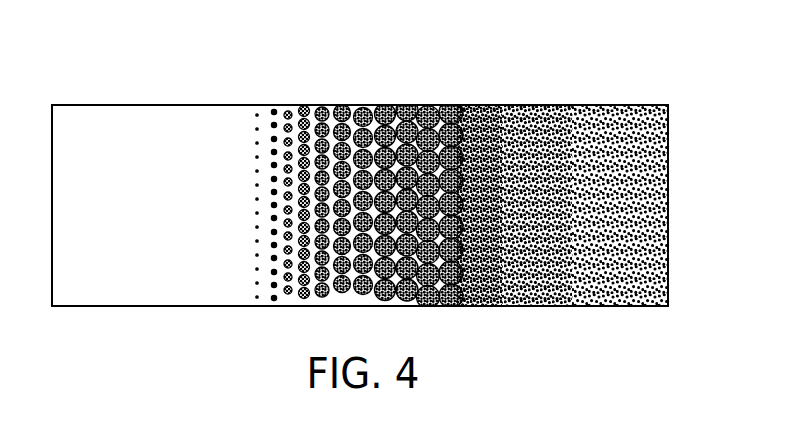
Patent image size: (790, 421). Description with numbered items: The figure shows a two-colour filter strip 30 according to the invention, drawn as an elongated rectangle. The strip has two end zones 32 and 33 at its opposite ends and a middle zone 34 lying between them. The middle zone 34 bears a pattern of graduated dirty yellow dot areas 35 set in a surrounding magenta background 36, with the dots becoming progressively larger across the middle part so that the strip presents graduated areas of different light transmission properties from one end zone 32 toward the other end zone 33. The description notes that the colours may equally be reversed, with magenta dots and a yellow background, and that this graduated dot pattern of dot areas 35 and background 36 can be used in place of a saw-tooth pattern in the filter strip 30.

The two-colour filter strip 30 is at (373, 177).
The end zone 32 is at (259, 62).
The end zone 33 is at (668, 85).
The middle zone 34 is at (359, 200).
The graduated dirty yellow dot areas 35 is at (356, 307).
The surrounding magenta background 36 is at (281, 204).